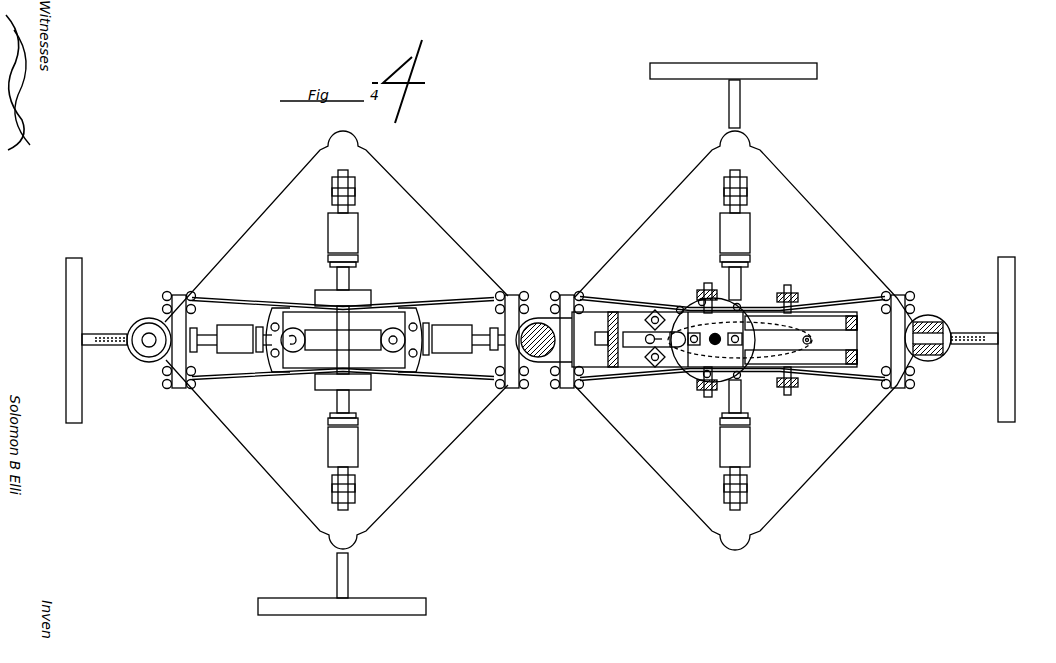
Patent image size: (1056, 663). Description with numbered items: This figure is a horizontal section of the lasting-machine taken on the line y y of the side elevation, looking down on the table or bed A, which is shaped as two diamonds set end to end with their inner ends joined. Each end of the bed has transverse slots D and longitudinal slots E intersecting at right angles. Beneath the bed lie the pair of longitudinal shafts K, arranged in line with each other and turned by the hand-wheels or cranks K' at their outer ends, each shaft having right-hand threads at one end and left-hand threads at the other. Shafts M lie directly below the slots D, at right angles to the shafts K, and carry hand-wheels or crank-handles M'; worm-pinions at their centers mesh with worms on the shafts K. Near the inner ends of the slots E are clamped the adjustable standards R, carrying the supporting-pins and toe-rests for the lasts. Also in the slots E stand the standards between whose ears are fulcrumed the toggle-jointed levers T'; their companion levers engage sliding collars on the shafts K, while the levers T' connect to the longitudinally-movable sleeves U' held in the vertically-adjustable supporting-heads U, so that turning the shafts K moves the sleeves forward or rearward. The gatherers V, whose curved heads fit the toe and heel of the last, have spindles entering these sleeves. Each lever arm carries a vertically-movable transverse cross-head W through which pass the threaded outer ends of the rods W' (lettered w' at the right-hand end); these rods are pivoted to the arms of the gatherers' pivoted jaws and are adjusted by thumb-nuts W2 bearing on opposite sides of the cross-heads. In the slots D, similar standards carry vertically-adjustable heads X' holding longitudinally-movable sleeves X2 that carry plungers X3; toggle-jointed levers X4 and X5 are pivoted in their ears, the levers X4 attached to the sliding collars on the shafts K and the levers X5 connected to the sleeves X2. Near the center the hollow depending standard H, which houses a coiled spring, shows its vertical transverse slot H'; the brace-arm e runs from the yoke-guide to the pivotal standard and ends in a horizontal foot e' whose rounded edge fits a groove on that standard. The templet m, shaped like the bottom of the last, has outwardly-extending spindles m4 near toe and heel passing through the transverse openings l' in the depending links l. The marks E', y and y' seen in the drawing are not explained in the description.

The table or bed A is at (636, 451).
The shafts M is at (555, 339).
The hand-wheels or crank-handles M' is at (537, 339).
The longitudinal horizontal shafts K is at (540, 351).
The hand-wheels or cranks K' is at (539, 340).
The depending standard H is at (545, 345).
The vertical transverse slot H' is at (936, 329).
The cross-head W is at (549, 342).
The thumb-nuts W2 is at (186, 292).
The rods W' is at (343, 341).
The tie rods w' is at (732, 342).
The toggle-jointed levers X5 is at (332, 192).
The toggle-jointed levers X4 is at (356, 182).
The vertically-adjustable heads X' is at (539, 340).
The longitudinally-movable sleeves X2 is at (352, 210).
The plungers X3 is at (368, 288).
The slots E is at (353, 386).
The slots D is at (357, 317).
The standards R is at (304, 346).
The gatherers V is at (268, 366).
The supporting-heads U is at (344, 339).
The longitudinally-movable sleeves U' is at (351, 355).
The toggle-jointed levers T' is at (344, 331).
The bearing loop E' is at (544, 363).
The horizontal foot e' is at (625, 337).
The brace-arm e is at (659, 339).
The templet m is at (753, 373).
The depending rods or links l is at (739, 342).
The transverse opening l' is at (738, 329).
The outwardly-extending spindles m4 is at (789, 288).
The guide bars y is at (811, 340).
The guide pin y' is at (741, 367).